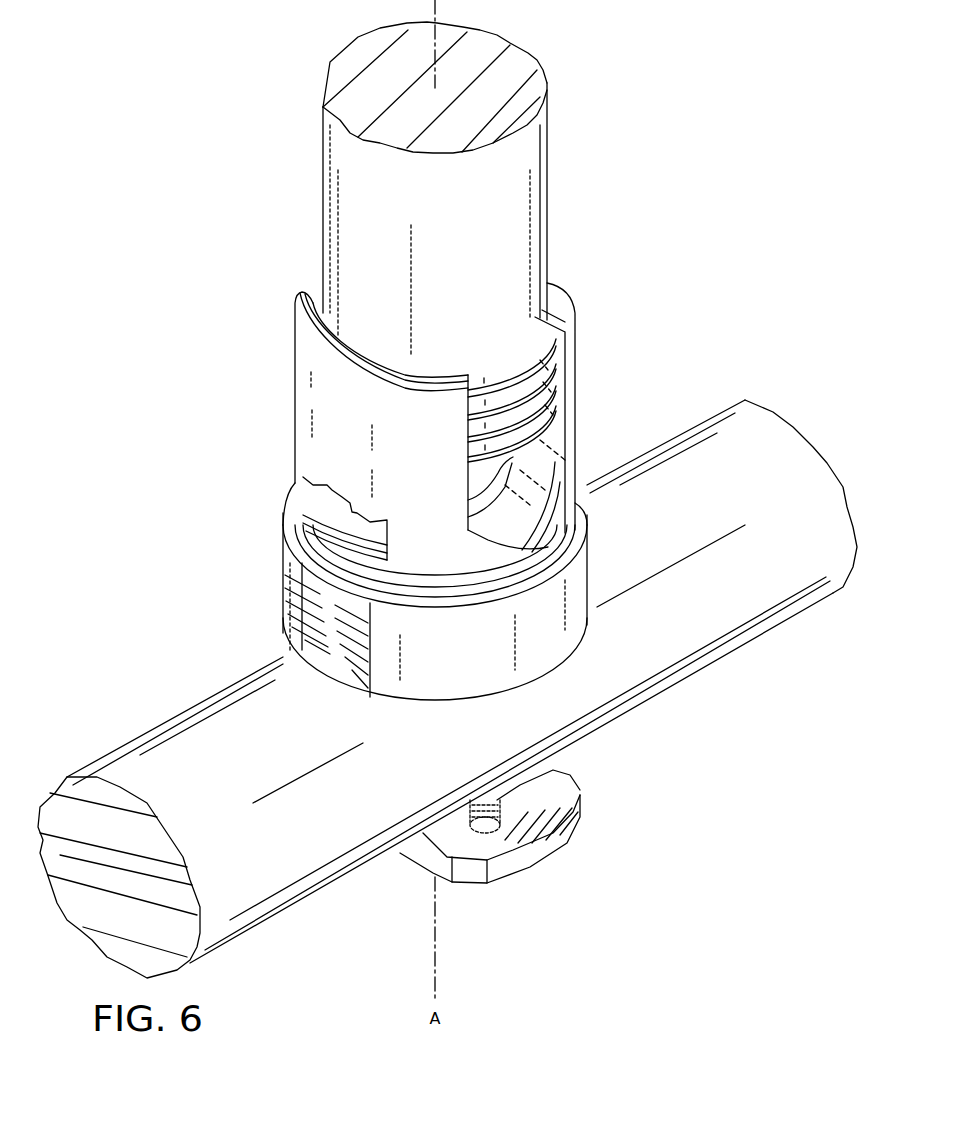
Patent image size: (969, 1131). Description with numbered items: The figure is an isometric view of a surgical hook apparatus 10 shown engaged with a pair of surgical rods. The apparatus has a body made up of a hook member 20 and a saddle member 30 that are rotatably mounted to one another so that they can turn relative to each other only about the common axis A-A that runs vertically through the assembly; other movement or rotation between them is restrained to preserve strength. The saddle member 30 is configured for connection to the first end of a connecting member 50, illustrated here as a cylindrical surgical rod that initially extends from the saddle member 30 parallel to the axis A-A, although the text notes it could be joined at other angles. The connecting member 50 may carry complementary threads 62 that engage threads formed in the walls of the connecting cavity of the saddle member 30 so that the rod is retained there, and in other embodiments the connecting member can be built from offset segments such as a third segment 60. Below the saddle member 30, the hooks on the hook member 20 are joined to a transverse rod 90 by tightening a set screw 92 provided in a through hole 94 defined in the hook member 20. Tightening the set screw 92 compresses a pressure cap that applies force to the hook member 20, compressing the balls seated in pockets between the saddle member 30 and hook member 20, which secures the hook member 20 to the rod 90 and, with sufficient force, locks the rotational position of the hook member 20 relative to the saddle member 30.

The surgical hook apparatus 10 is at (175, 418).
The hook member 20 is at (293, 352).
The saddle member 30 is at (588, 550).
The connecting member 50 is at (320, 170).
The third segment 60 is at (548, 180).
The complementary threads 62 is at (578, 415).
The rod 90 is at (745, 653).
The set screw 92 is at (543, 770).
The through hole 94 is at (483, 833).